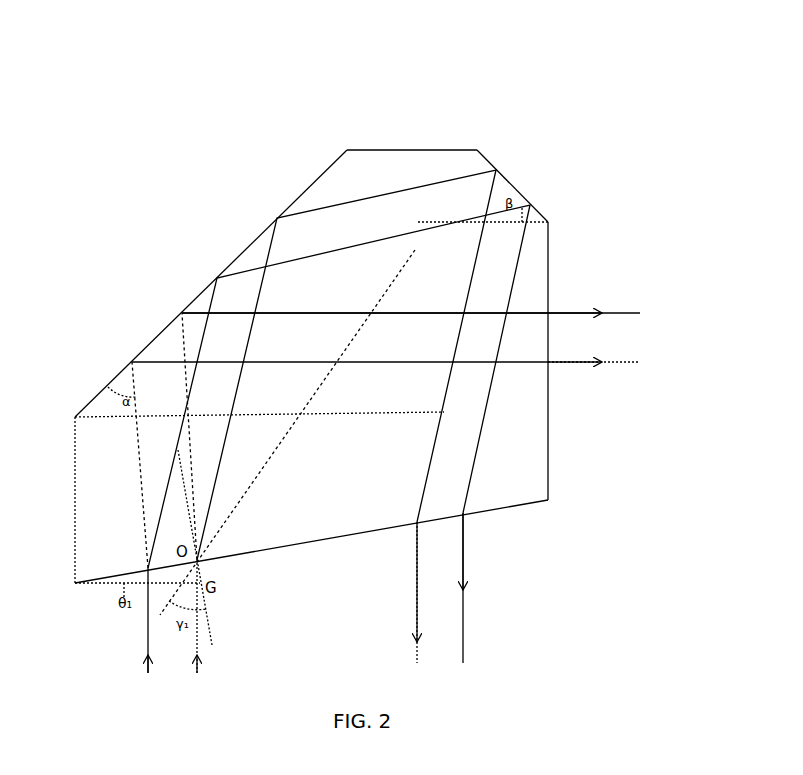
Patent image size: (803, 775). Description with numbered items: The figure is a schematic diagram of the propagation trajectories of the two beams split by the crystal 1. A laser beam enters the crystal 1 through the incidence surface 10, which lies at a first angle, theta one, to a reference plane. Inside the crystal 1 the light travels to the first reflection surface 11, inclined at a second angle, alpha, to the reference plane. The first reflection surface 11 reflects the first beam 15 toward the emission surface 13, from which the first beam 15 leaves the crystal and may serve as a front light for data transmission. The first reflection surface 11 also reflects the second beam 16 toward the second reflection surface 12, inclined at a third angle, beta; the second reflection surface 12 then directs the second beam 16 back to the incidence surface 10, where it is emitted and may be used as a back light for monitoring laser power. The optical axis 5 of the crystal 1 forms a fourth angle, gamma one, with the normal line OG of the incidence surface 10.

The crystal 1 is at (407, 123).
The optical axis 5 is at (248, 487).
The incidence surface 10 is at (463, 523).
The first reflection surface 11 is at (142, 350).
The second reflection surface 12 is at (523, 193).
The emission surface 13 is at (548, 275).
The first beam 15 is at (617, 312).
The second beam 16 is at (417, 598).